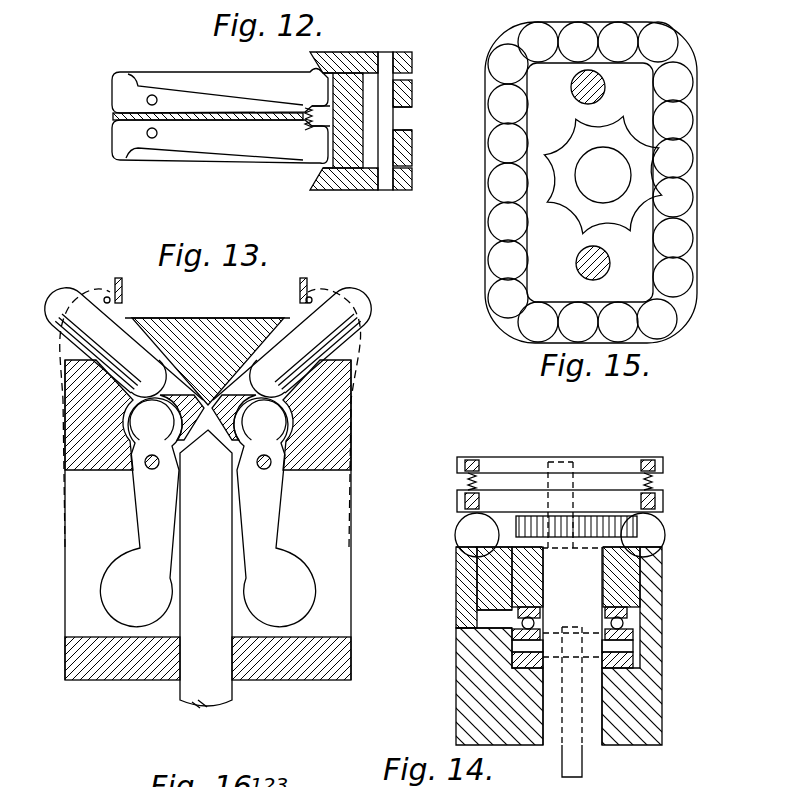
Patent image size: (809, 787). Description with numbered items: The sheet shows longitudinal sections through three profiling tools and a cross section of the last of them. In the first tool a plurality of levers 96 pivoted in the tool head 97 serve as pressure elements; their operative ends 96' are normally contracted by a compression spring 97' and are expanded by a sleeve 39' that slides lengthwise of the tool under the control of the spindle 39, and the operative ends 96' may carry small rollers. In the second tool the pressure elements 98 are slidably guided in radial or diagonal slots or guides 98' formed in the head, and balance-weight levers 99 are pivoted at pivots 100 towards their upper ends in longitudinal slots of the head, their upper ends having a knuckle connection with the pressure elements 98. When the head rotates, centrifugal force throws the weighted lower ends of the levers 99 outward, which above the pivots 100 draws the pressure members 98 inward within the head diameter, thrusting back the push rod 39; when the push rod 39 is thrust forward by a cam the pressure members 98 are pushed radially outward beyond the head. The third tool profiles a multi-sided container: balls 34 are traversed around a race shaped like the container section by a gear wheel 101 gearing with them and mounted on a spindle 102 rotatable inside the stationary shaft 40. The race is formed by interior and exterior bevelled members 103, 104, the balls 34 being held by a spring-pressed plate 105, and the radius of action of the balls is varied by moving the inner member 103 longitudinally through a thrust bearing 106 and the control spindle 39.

In FIG. 14, the balls 34 is at (645, 534).
In FIG. 12, the spindle 39 is at (428, 121).
In FIG. 13, the spindle 39 is at (229, 585).
In FIG. 14, the spindle 39 is at (589, 707).
In FIG. 12, the sleeve 39' is at (423, 100).
In FIG. 14, the stationary shaft 40 is at (462, 707).
In FIG. 12, the levers 96 is at (220, 159).
In FIG. 12, the operative ends 96' is at (220, 138).
In FIG. 12, the tool head 97 is at (344, 141).
In FIG. 12, the compression spring 97' is at (295, 156).
In FIG. 13, the pressure elements 98 is at (318, 344).
In FIG. 13, the slots or guides 98' is at (158, 338).
In FIG. 13, the balance-weight levers 99 is at (160, 518).
In FIG. 13, the pivots 100 is at (275, 453).
In FIG. 15, the gear wheel 101 is at (587, 208).
In FIG. 14, the gear wheel 101 is at (573, 517).
In FIG. 14, the spindle 102 is at (553, 735).
In FIG. 14, the interior bevelled member 103 is at (615, 582).
In FIG. 14, the exterior bevelled member 104 is at (648, 628).
In FIG. 14, the spring-pressed plate 105 is at (518, 508).
In FIG. 14, the thrust bearing 106 is at (513, 632).